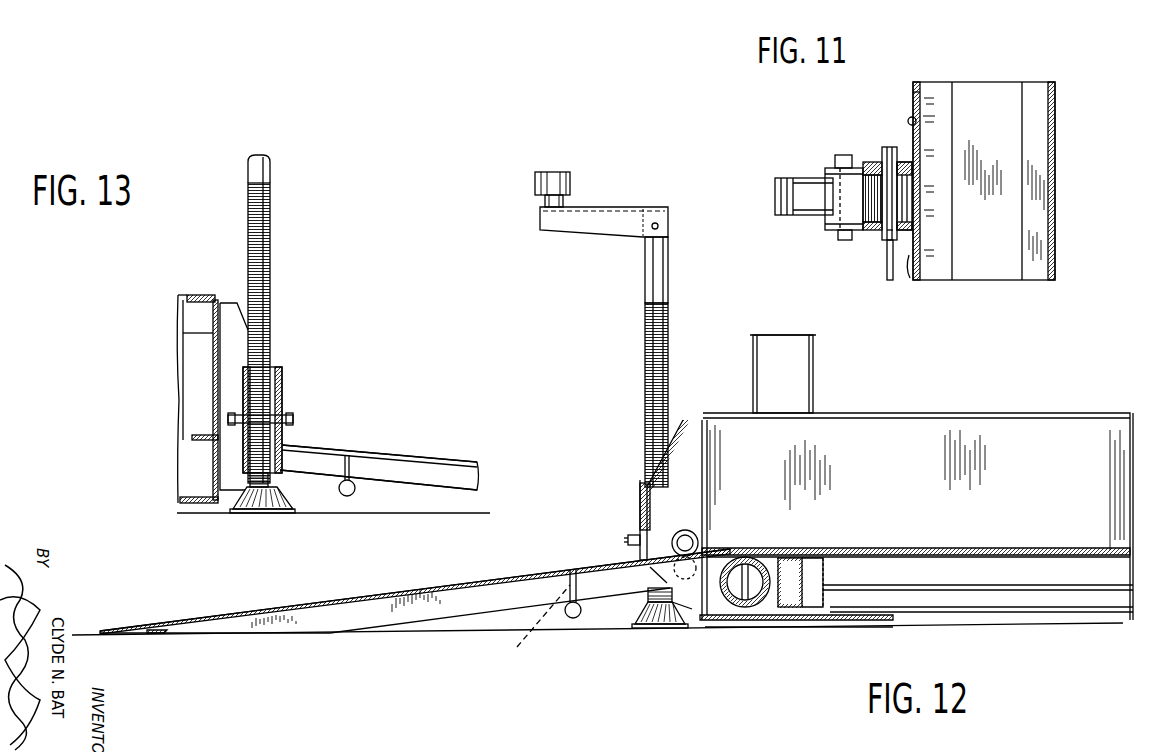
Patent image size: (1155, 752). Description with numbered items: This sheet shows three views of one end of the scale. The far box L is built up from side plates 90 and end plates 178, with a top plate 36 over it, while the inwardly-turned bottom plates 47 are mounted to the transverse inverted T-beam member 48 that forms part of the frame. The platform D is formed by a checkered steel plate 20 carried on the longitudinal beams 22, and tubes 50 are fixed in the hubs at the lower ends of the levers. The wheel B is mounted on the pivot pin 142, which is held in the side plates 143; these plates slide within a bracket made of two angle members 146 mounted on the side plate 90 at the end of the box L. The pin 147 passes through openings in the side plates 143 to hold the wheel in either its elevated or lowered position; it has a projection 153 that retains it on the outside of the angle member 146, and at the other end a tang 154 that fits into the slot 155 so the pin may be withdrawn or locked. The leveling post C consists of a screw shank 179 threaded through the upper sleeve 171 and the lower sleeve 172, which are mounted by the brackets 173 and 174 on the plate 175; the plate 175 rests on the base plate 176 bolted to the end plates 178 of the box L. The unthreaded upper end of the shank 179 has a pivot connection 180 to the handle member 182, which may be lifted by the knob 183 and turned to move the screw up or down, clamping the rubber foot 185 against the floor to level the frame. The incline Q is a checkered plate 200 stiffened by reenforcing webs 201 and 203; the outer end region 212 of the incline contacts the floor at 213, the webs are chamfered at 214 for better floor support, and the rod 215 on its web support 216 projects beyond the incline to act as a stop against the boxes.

In FIG. 11, the far box L is at (1030, 78).
In FIG. 12, the far box L is at (1053, 412).
In FIG. 13, the far box L is at (177, 355).
In FIG. 11, the wheel B is at (777, 200).
In FIG. 12, the jack screw column C is at (644, 344).
In FIG. 13, the jack screw column C is at (273, 237).
In FIG. 12, the platform D is at (961, 546).
In FIG. 12, the incline Q is at (434, 586).
In FIG. 13, the incline Q is at (456, 461).
In FIG. 11, the side plate 90 is at (912, 93).
In FIG. 11, the pivot pin 142 is at (838, 241).
In FIG. 11, the side plates 143 is at (866, 160).
In FIG. 11, the angle members 146 is at (916, 120).
In FIG. 11, the pin 147 is at (886, 197).
In FIG. 11, the projection 153 is at (896, 156).
In FIG. 11, the tang 154 is at (889, 262).
In FIG. 11, the slot 155 is at (893, 232).
In FIG. 12, the shank 179 is at (650, 265).
In FIG. 13, the shank 179 is at (272, 158).
In FIG. 12, the pivot connection 180 is at (669, 222).
In FIG. 12, the handle member 182 is at (583, 211).
In FIG. 12, the knob 183 is at (559, 172).
In FIG. 12, the upper sleeve 171 is at (640, 486).
In FIG. 13, the upper sleeve 171 is at (283, 379).
In FIG. 13, the lower sleeve 172 is at (283, 452).
In FIG. 12, the bracket 173 is at (685, 554).
In FIG. 13, the bracket 173 is at (285, 413).
In FIG. 12, the plate 175 is at (627, 540).
In FIG. 13, the plate 175 is at (294, 418).
In FIG. 12, the base plate 176 is at (667, 513).
In FIG. 13, the base plate 176 is at (244, 343).
In FIG. 13, the end plates 178 is at (213, 386).
In FIG. 13, the bracket 174 is at (236, 428).
In FIG. 13, the top plate 36 is at (190, 295).
In FIG. 12, the bottom plates 47 is at (884, 622).
In FIG. 13, the bottom plates 47 is at (192, 504).
In FIG. 12, the transverse inverted T-beam member 48 is at (1023, 614).
In FIG. 12, the steel plate 20 is at (1037, 547).
In FIG. 12, the longitudinal beams 22 is at (813, 608).
In FIG. 12, the tubes 50 is at (760, 598).
In FIG. 12, the rubber foot 185 is at (662, 617).
In FIG. 13, the rubber foot 185 is at (253, 500).
In FIG. 12, the plates 200 is at (333, 601).
In FIG. 13, the plates 200 is at (412, 455).
In FIG. 13, the reenforcing web 201 is at (420, 477).
In FIG. 12, the reenforcing web 203 is at (460, 607).
In FIG. 12, the ramp tip 212 is at (103, 629).
In FIG. 12, the floor contact 213 is at (95, 638).
In FIG. 12, the chamfer 214 is at (257, 636).
In FIG. 12, the rod 215 is at (573, 619).
In FIG. 13, the rod 215 is at (347, 497).
In FIG. 12, the web support 216 is at (526, 624).